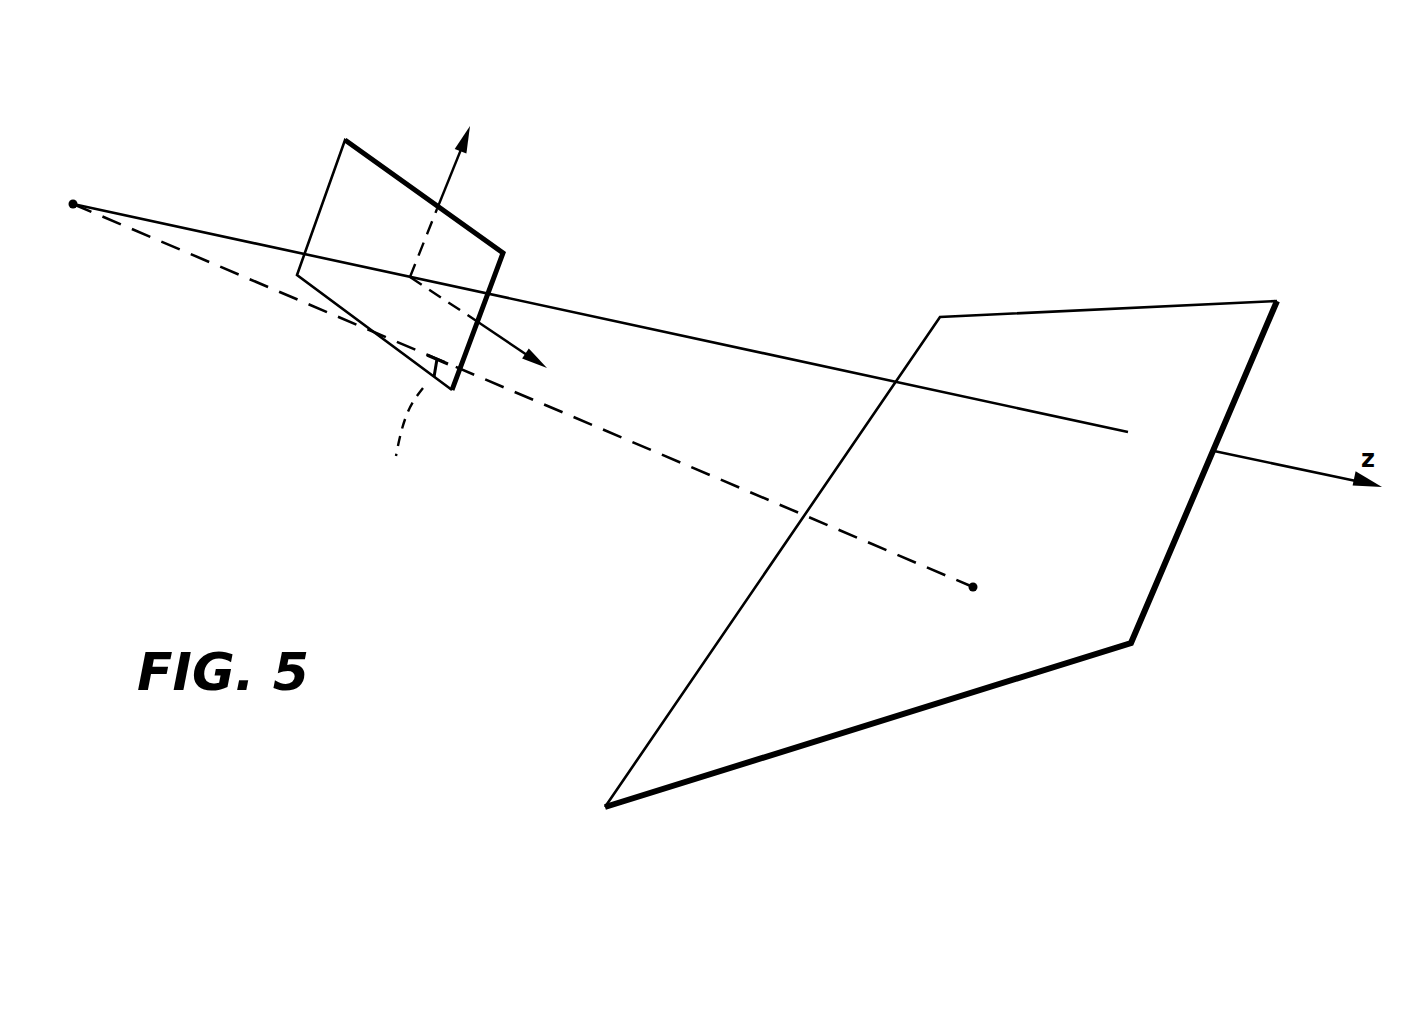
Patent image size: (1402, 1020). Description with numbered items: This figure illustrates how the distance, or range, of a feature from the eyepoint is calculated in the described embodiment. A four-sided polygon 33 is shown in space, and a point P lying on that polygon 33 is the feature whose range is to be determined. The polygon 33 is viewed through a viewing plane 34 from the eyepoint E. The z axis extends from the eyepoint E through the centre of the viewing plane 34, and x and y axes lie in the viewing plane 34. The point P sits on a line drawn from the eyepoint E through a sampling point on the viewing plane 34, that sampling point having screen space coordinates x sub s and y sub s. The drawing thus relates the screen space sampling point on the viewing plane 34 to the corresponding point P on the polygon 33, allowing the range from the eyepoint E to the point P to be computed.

The four-sided polygon 33 is at (1132, 320).
The viewing plane 34 is at (337, 160).
The eyepoint E is at (69, 224).
The point P is at (986, 589).